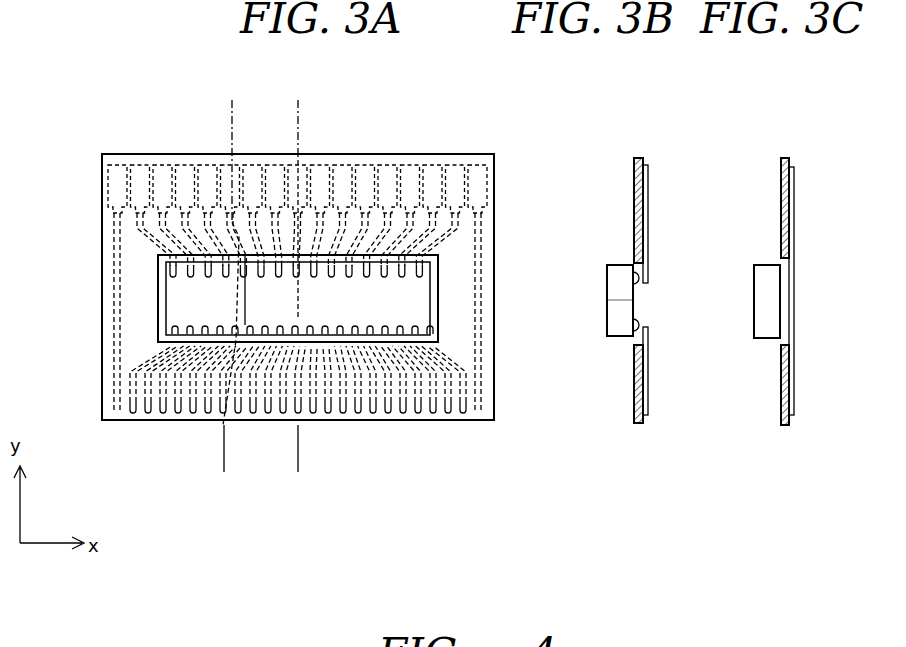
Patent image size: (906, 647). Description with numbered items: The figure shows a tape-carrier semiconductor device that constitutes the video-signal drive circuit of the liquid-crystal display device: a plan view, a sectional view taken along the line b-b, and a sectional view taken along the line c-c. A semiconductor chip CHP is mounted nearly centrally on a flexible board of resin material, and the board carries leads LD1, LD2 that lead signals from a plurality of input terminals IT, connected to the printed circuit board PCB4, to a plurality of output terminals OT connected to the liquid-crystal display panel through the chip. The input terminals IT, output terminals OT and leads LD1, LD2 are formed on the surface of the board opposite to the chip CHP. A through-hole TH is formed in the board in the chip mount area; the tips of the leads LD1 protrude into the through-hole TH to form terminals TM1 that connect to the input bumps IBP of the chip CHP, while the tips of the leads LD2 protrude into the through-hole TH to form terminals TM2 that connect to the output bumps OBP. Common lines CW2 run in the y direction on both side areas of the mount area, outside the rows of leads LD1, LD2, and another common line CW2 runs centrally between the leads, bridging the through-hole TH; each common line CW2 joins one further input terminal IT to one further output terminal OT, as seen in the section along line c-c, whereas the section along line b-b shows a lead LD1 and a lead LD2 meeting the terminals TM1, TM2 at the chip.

In FIG. 3A, the printed circuit board PCB4 is at (108, 375).
In FIG. 3B, the printed circuit board PCB4 is at (636, 160).
In FIG. 3C, the printed circuit board PCB4 is at (782, 160).
In FIG. 3A, the input terminals IT is at (322, 168).
In FIG. 3A, the common lines CW2 is at (118, 234).
In FIG. 3C, the common lines CW2 is at (793, 280).
In FIG. 3A, the leads LD1 is at (152, 245).
In FIG. 3B, the leads LD1 is at (648, 212).
In FIG. 3A, the leads LD2 is at (148, 358).
In FIG. 3B, the leads LD2 is at (648, 365).
In FIG. 3A, the semiconductor chip CHP is at (160, 307).
In FIG. 3B, the semiconductor chip CHP is at (618, 265).
In FIG. 3C, the semiconductor chip CHP is at (765, 275).
In FIG. 3A, the through-hole TH is at (158, 322).
In FIG. 3A, the output terminals OT is at (205, 400).
In FIG. 3B, the terminals TM1 is at (645, 285).
In FIG. 3B, the terminals TM2 is at (645, 327).
In FIG. 3B, the input bumps IBP is at (620, 300).
In FIG. 3B, the output bumps OBP is at (632, 328).
In FIG. 3A, the line b- b is at (232, 109).
In FIG. 3A, the line c- c is at (298, 109).